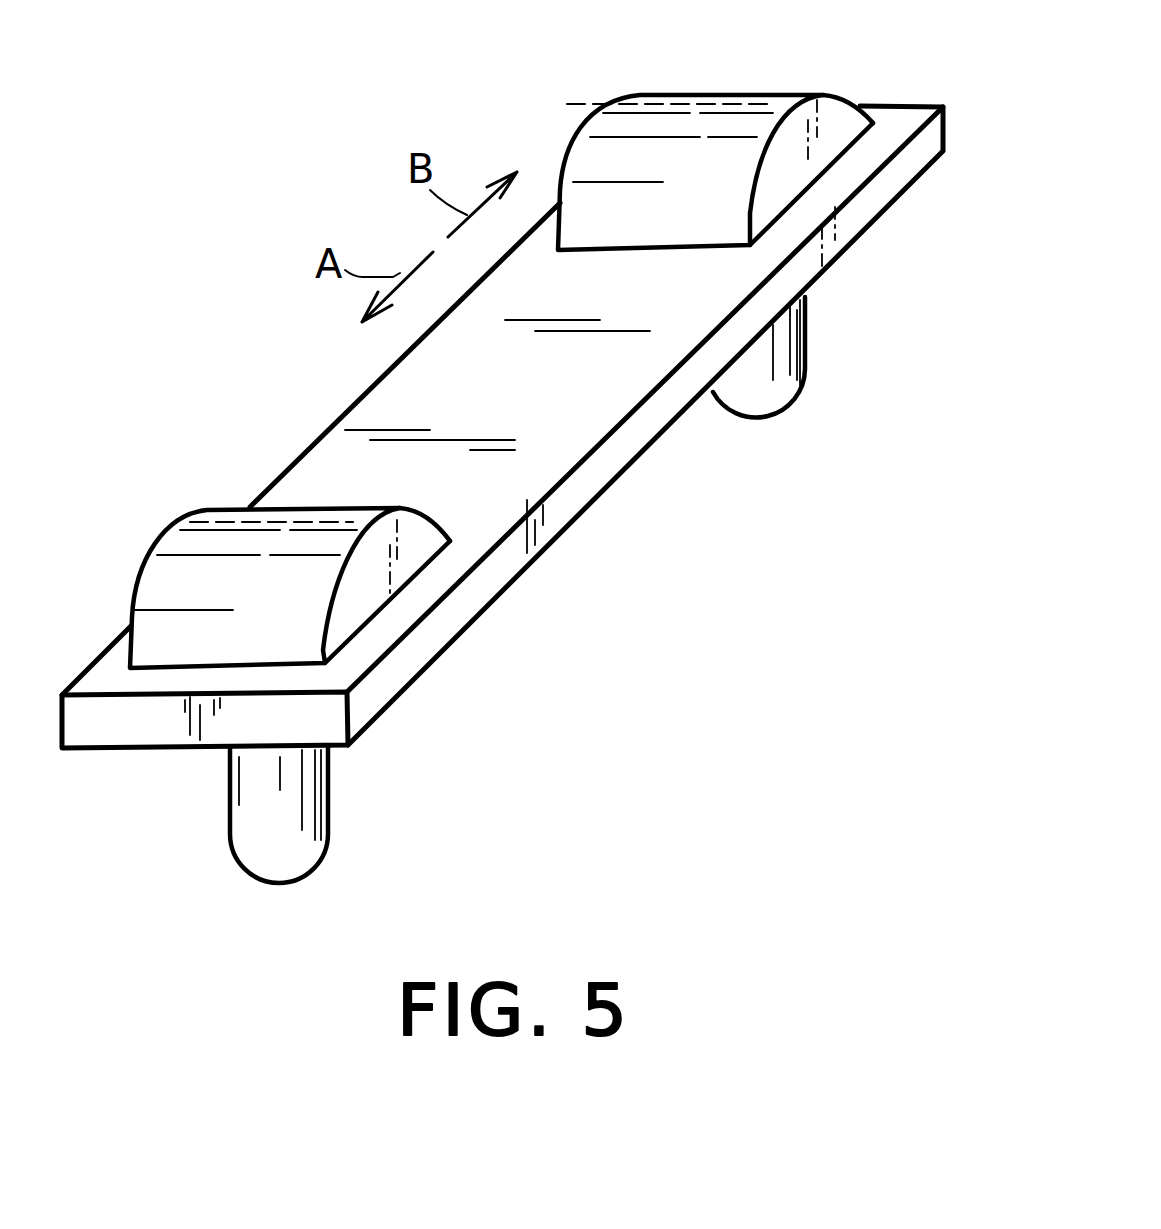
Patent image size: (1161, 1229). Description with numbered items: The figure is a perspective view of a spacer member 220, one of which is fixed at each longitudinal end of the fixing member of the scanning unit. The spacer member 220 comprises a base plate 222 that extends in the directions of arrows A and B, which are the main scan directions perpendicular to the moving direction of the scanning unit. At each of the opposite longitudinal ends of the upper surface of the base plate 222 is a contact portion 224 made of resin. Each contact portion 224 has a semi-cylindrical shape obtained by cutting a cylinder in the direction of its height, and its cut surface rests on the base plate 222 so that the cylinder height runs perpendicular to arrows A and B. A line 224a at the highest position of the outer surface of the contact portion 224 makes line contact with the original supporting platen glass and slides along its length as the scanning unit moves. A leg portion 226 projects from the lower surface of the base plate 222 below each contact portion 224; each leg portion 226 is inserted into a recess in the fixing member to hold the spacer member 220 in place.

The spacer member 220 is at (517, 458).
The base plate 222 is at (617, 450).
The contact portion 224 is at (802, 182).
The line 224a is at (713, 100).
The leg portion 226 is at (783, 378).